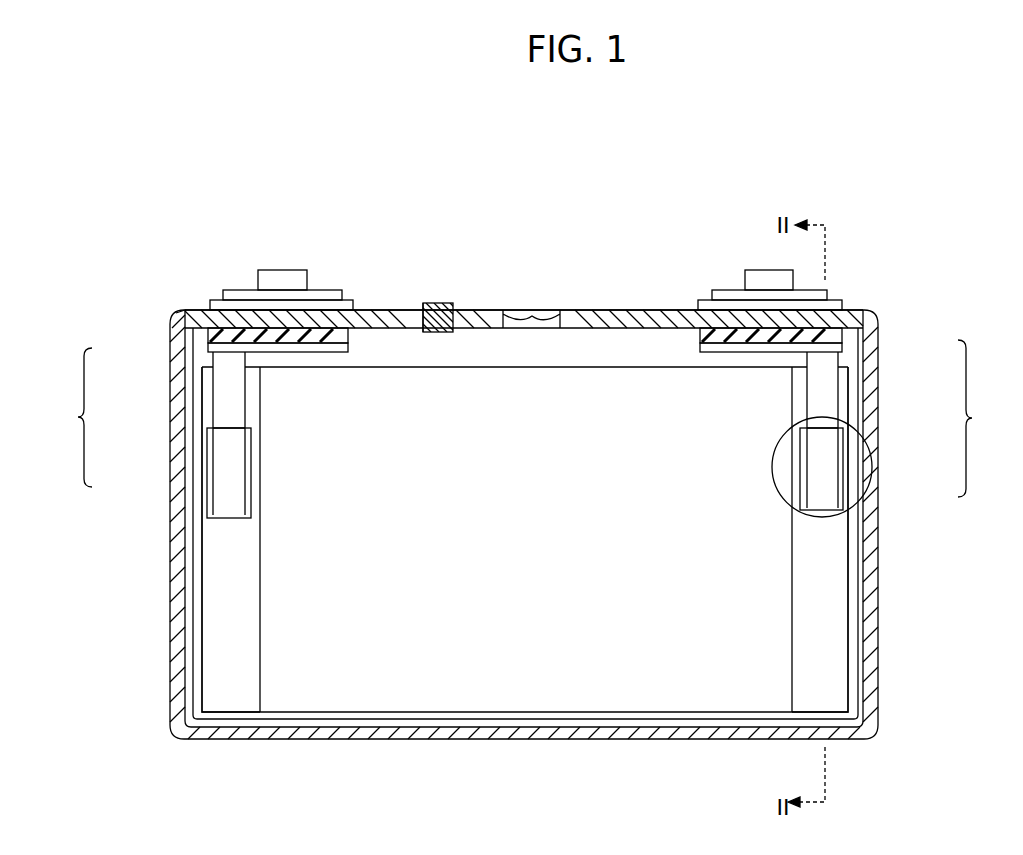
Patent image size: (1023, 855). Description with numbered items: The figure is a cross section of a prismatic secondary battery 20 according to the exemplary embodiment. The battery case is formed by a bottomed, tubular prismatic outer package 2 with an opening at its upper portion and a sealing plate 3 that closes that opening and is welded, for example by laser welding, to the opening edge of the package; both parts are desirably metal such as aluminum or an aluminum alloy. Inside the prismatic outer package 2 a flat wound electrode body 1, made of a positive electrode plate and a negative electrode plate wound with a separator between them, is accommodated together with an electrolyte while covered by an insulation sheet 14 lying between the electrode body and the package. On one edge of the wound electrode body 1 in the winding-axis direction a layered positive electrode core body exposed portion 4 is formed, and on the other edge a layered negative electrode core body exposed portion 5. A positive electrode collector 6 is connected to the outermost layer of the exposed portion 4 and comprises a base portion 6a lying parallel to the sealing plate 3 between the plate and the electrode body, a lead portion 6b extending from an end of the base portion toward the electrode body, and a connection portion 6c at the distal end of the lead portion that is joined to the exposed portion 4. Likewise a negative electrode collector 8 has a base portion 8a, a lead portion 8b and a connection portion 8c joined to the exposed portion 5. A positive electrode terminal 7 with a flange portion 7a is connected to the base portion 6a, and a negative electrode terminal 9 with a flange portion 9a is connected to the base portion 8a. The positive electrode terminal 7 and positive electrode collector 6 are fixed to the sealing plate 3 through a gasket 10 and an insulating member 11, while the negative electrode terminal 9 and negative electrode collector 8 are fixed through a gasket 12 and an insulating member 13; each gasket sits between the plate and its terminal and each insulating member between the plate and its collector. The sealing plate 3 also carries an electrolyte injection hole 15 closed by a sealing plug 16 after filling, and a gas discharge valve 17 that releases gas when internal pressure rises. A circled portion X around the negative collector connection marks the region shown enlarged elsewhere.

The wound electrode body 1 is at (477, 708).
The prismatic outer package 2 is at (732, 734).
The sealing plate 3 is at (607, 320).
The positive electrode core body exposed portion 4 is at (222, 700).
The negative electrode core body exposed portion 5 is at (832, 700).
The positive electrode collector 6 is at (206, 430).
The base portion 6a is at (217, 345).
The lead portion 6b is at (225, 403).
The connection portion 6c is at (222, 472).
The positive electrode terminal 7 is at (280, 278).
The flange portion 7a is at (238, 297).
The negative electrode collector 8 is at (843, 424).
The base portion 8a is at (832, 347).
The lead portion 8b is at (825, 400).
The connection portion 8c is at (830, 482).
The negative electrode terminal 9 is at (755, 278).
The flange portion 9a is at (720, 297).
The gasket 10 is at (213, 307).
The insulating member 11 is at (217, 337).
The gasket 12 is at (698, 308).
The insulating member 13 is at (833, 335).
The insulation sheet 14 is at (192, 633).
The electrolyte injection hole 15 is at (427, 307).
The sealing plug 16 is at (442, 310).
The gas discharge valve 17 is at (532, 315).
The prismatic secondary battery 20 is at (418, 191).
The portion X is at (858, 508).